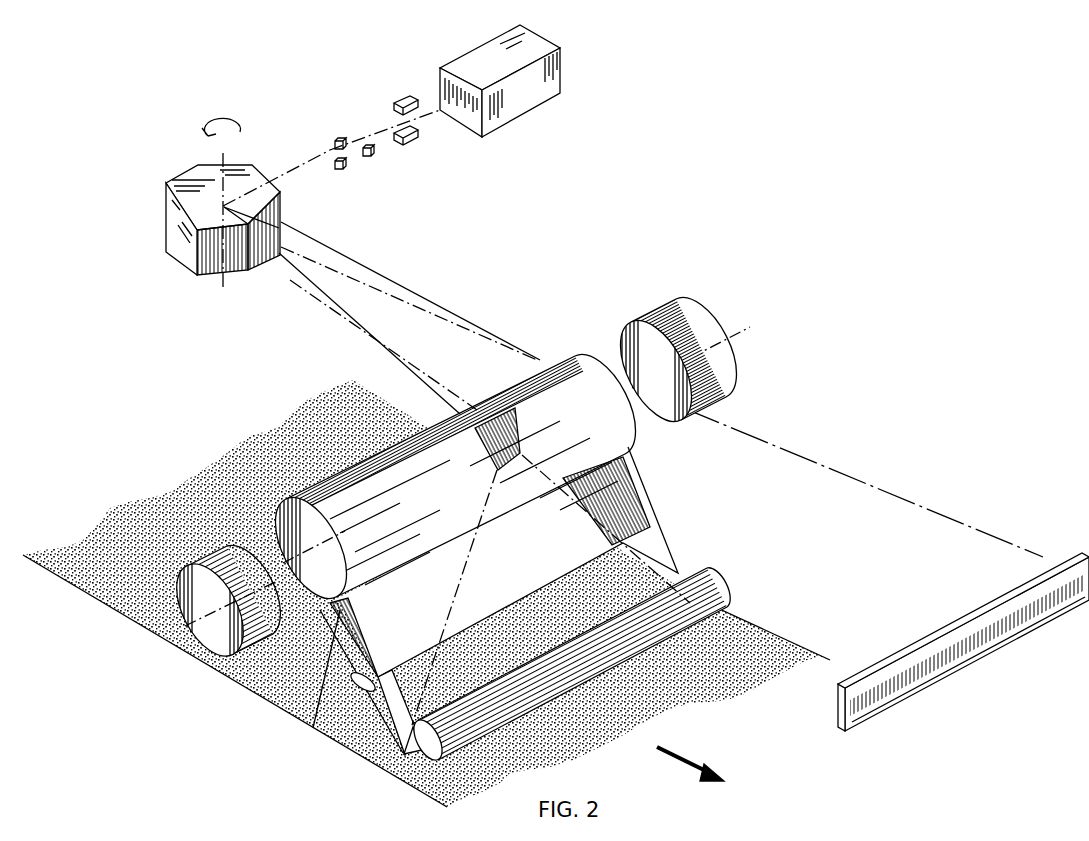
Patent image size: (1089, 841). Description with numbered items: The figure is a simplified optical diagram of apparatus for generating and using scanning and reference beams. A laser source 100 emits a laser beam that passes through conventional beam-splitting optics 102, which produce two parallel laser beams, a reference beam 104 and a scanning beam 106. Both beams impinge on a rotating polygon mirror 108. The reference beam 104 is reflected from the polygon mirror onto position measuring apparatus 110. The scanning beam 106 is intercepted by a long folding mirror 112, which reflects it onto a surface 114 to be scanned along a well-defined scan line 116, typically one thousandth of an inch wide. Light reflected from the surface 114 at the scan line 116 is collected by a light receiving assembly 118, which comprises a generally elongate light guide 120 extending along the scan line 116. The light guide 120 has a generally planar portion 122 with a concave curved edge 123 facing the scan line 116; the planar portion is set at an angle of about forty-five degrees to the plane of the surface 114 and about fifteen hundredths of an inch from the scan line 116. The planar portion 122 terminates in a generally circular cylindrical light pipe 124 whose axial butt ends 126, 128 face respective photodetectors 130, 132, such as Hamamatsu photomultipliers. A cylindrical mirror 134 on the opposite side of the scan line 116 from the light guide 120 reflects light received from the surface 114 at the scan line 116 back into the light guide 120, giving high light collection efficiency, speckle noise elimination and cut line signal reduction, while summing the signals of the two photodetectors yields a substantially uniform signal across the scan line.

The laser source 100 is at (493, 117).
The beam-splitting optics 102 is at (400, 105).
The reference beam 104 is at (757, 438).
The scanning beam 106 is at (330, 323).
The rotating polygon mirror 108 is at (163, 192).
The position measuring apparatus 110 is at (993, 642).
The long folding mirror 112 is at (550, 413).
The surface to be scanned 114 is at (120, 583).
The scan line 116 is at (413, 727).
The light receiving assembly 118 is at (355, 675).
The light guide 120 is at (255, 685).
The planar portion 122 is at (283, 707).
The concave curved edge 123 is at (313, 728).
The light pipe 124 is at (480, 413).
The axial butt end 126 is at (240, 500).
The axial butt end 128 is at (632, 387).
The photodetector 130 is at (207, 630).
The photodetector 132 is at (712, 318).
The cylindrical mirror 134 is at (718, 582).